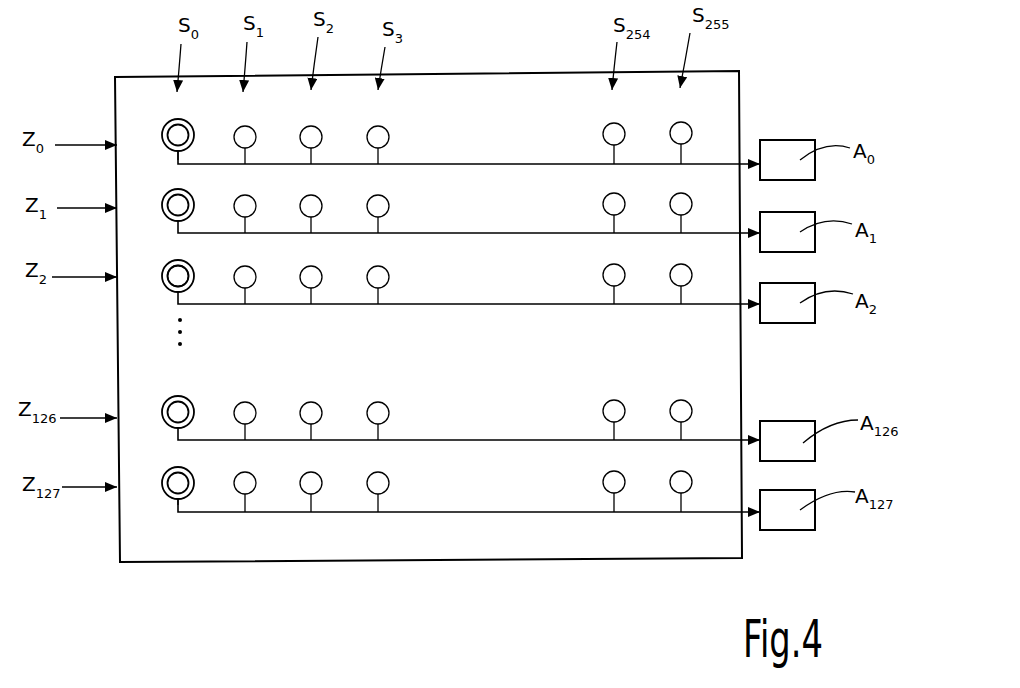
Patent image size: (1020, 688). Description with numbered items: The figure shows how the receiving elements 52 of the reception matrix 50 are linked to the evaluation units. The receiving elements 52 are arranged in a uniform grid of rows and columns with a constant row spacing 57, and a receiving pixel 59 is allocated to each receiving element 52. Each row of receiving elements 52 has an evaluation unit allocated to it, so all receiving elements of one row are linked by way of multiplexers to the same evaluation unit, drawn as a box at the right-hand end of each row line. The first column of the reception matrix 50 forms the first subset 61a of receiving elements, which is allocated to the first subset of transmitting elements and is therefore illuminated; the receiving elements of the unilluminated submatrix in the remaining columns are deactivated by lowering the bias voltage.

The reception matrix 50 is at (768, 60).
The receiving element 52 is at (173, 135).
The row spacing 57 is at (305, 206).
The receiving pixel 59 is at (180, 272).
The first subset of receiving elements 61a is at (160, 95).